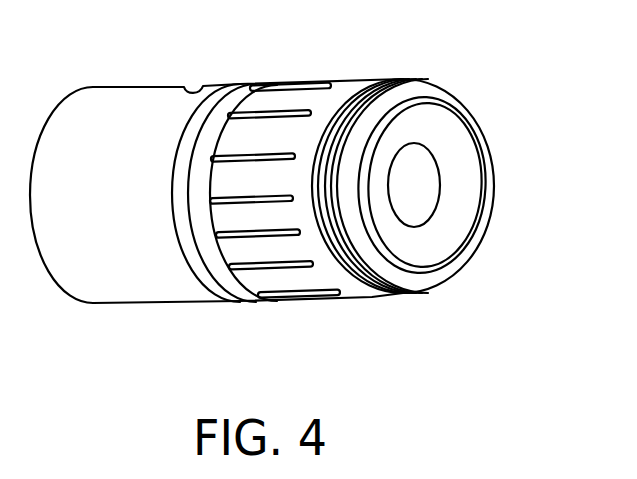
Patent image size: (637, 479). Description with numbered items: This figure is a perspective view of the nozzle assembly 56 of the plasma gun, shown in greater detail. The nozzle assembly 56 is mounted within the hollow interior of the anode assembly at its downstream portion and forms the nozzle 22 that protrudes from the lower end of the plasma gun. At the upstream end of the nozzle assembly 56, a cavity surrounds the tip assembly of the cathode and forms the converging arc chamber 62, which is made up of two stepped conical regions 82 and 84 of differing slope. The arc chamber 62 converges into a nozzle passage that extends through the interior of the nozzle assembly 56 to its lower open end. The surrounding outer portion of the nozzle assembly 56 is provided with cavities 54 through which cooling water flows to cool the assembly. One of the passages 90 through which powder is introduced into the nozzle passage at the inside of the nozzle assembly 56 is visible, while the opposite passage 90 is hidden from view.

The nozzle 22 is at (74, 287).
The cavities 54 is at (298, 83).
The nozzle assembly 56 is at (146, 316).
The arc chamber 62 is at (452, 174).
The conical region 82 is at (457, 227).
The conical region 84 is at (413, 213).
The passage 90 is at (197, 84).